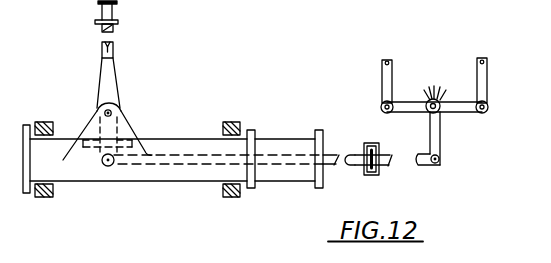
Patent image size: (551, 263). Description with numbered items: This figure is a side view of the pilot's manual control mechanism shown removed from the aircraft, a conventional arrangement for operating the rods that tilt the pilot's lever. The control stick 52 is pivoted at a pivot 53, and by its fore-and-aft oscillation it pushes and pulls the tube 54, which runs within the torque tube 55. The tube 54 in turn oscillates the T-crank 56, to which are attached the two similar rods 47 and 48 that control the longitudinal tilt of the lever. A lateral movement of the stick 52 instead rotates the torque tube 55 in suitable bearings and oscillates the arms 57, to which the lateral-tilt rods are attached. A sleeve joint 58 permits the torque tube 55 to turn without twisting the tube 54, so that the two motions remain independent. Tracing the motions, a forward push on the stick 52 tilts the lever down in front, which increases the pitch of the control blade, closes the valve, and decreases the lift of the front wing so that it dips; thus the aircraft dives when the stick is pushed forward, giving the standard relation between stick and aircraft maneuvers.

The rod 47 is at (383, 73).
The rod 48 is at (487, 73).
The control stick 52 is at (114, 50).
The pivot 53 is at (111, 112).
The tube 54 is at (202, 162).
The torque tube 55 is at (120, 177).
The T-crank 56 is at (458, 110).
The arm 57 is at (322, 178).
The sleeve joint 58 is at (371, 177).